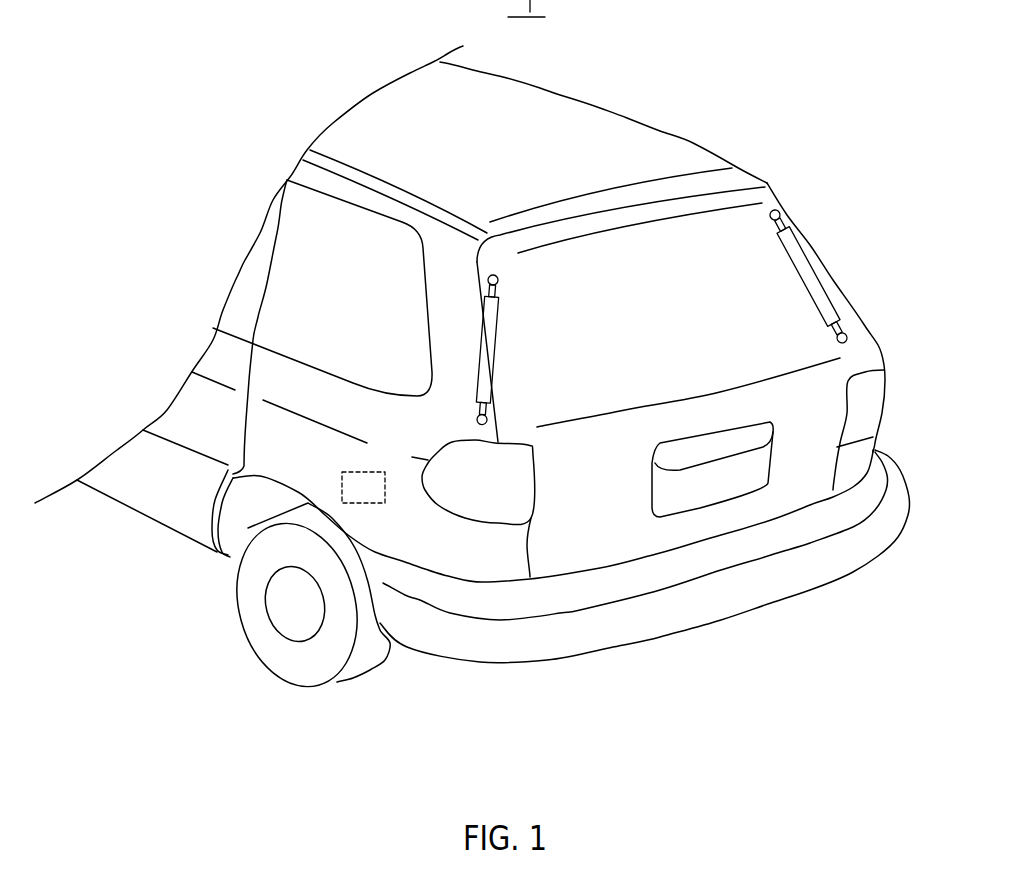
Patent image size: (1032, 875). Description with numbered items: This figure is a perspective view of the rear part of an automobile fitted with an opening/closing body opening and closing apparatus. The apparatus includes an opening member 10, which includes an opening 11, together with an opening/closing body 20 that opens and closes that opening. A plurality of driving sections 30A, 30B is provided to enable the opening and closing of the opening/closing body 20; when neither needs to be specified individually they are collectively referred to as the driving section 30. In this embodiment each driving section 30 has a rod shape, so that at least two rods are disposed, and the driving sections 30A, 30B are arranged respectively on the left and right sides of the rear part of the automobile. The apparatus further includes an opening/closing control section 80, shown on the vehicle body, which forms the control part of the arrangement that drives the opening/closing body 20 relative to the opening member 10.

The opening member 10 is at (705, 148).
The opening 11 is at (531, 530).
The opening/closing body 20 is at (733, 248).
The driving section 30 is at (668, 303).
The driving section 30A is at (503, 330).
The driving section 30B is at (812, 266).
The opening/closing control section 80 is at (358, 471).